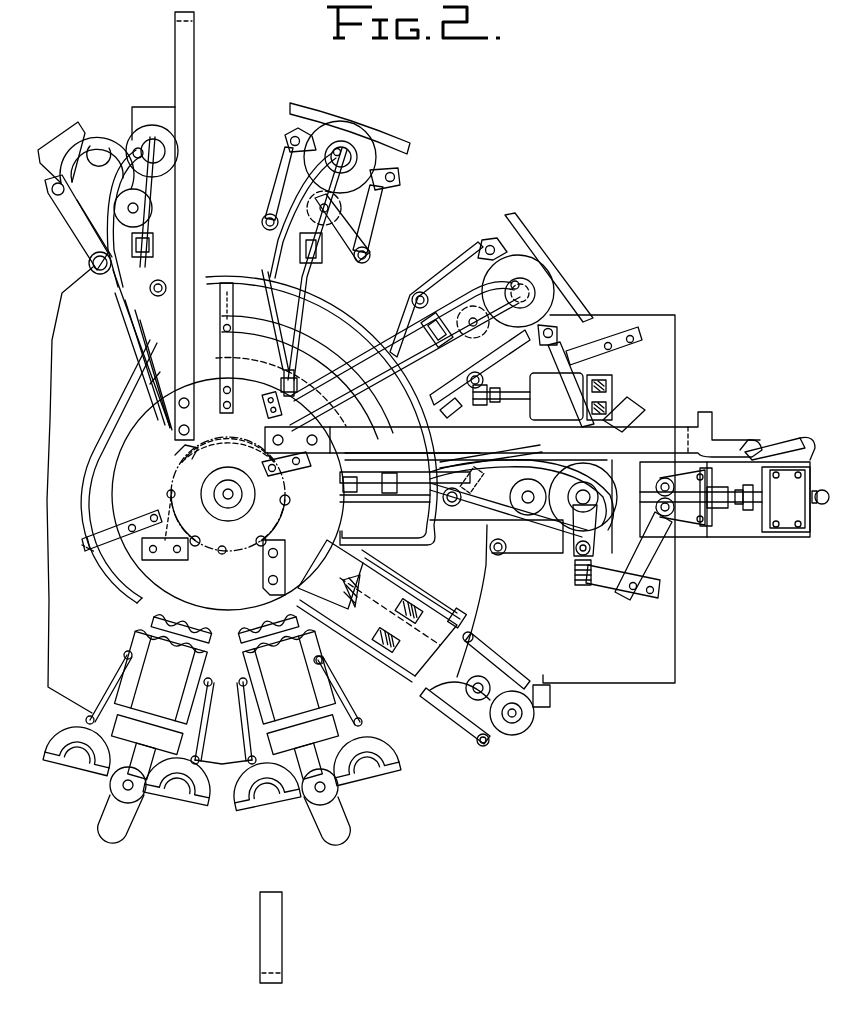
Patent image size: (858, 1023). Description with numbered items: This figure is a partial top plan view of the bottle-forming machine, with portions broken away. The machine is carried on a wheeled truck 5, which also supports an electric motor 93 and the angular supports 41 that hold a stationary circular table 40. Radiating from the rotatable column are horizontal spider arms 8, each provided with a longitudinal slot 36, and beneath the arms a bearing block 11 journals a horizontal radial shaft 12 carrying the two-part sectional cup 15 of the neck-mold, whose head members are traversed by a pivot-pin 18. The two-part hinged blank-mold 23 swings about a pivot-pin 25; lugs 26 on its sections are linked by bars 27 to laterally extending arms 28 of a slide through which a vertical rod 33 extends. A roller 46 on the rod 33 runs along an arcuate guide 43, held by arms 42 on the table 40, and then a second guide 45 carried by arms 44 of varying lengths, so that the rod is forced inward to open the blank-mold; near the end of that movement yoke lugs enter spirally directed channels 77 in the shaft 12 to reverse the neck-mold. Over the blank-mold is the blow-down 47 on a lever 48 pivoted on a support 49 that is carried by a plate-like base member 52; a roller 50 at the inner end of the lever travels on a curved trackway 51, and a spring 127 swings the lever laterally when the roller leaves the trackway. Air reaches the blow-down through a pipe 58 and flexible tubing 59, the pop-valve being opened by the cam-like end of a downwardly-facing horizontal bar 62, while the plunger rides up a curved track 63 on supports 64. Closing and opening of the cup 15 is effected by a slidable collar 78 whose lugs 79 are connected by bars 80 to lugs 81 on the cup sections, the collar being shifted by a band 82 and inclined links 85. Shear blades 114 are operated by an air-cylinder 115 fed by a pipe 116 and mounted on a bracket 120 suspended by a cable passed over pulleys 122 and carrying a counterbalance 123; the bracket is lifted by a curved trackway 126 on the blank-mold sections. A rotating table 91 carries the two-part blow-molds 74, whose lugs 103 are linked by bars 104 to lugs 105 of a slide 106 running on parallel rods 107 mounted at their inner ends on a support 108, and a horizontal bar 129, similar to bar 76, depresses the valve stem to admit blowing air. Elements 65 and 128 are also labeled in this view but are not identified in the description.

The wheeled truck 5 is at (632, 676).
The horizontal radial arms 8 is at (283, 265).
The bearing block 11 is at (382, 652).
The horizontal radially disposed shaft 12 is at (395, 668).
The two-part sectional cup 15 is at (515, 735).
The pivot-pin 18 is at (468, 700).
The blank-mold 23 is at (88, 140).
The pivot-pin 25 is at (470, 340).
The laterally extending lugs 26 is at (288, 138).
The bars 27 is at (283, 175).
The laterally extending arms 28 is at (370, 250).
The vertical shaft or rod 33 is at (318, 304).
The slot 36 is at (360, 347).
The circular table 40 is at (150, 575).
The angular supports 41 is at (178, 78).
The outwardly directed arms 42 is at (228, 285).
The horizontal guide 43 is at (350, 326).
The outwardly extending arms 44 is at (143, 393).
The second guide 45 is at (95, 442).
The roller 46 is at (150, 290).
The blow-down 47 is at (162, 155).
The lever 48 is at (150, 200).
The support 49 is at (300, 250).
The roller 50 is at (280, 385).
The curved trackway 51 is at (310, 412).
The plate-like base member 52 is at (363, 256).
The pipe 58 is at (135, 352).
The flexible tubing 59 is at (518, 262).
The horizontal bar 62 is at (425, 410).
The curved track 63 is at (575, 362).
The supports 64 is at (590, 588).
The spoke 65 is at (238, 518).
The blow-mold 74 is at (205, 812).
The bar 76 is at (240, 446).
The spirally directed channels 77 is at (338, 592).
The collar 78 is at (455, 609).
The lugs 79 is at (475, 637).
The bars 80 is at (495, 655).
The lugs 81 is at (551, 695).
The band 82 is at (412, 604).
The inclined links 85 is at (418, 567).
The table 91 is at (75, 690).
The electric motor 93 is at (608, 393).
The lugs 103 is at (200, 760).
The bars 104 is at (196, 720).
The lugs 105 is at (222, 674).
The slide 106 is at (165, 648).
The parallel horizontal rods 107 is at (118, 700).
The support 108 is at (152, 622).
The shear blades 114 is at (635, 418).
The air-cylinder 115 is at (780, 530).
The pipe 116 is at (820, 508).
The supporting shelf or bracket 120 is at (735, 532).
The pulleys 122 is at (775, 455).
The counterbalance 123 is at (810, 440).
The curved trackway 126 is at (412, 150).
The spring 127 is at (112, 287).
The hub 128 is at (222, 492).
The horizontal bar 129 is at (212, 565).